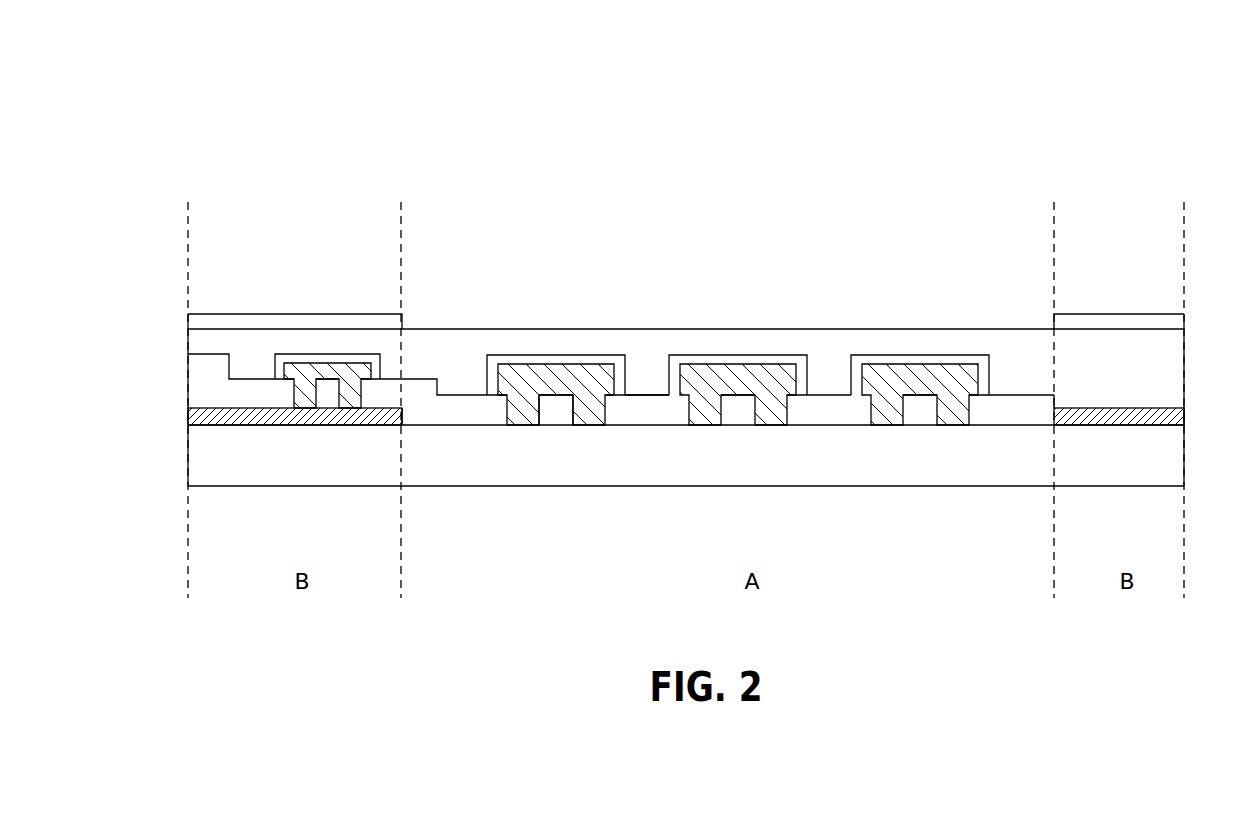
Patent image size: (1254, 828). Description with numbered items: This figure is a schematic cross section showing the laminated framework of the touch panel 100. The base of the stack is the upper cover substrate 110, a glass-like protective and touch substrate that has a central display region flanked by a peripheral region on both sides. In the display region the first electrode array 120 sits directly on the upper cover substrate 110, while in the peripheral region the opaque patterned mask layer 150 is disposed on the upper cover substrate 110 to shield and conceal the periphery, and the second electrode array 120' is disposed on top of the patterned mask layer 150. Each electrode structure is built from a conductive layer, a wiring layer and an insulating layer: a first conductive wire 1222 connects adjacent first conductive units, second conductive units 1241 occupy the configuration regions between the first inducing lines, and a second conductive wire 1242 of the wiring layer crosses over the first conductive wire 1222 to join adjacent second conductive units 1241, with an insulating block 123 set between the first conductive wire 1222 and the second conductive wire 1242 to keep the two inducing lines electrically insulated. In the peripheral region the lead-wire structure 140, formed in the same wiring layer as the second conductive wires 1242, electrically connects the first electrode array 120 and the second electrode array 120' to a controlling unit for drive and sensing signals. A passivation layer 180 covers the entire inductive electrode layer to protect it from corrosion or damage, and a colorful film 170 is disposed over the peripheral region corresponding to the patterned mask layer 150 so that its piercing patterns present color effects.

The touch panel 100 is at (322, 105).
The upper cover substrate 110 is at (198, 455).
The first electrode array 120 is at (738, 384).
The second electrode array 120' is at (327, 322).
The first conductive wire 1222 is at (553, 418).
The insulating block 123 is at (592, 373).
The second conductive unit 1241 is at (453, 408).
The second conductive wire 1242 is at (525, 360).
The lead-wire structure 140 is at (200, 382).
The patterned mask layer 150 is at (188, 417).
The colorful film 170 is at (195, 322).
The passivation layer 180 is at (195, 345).